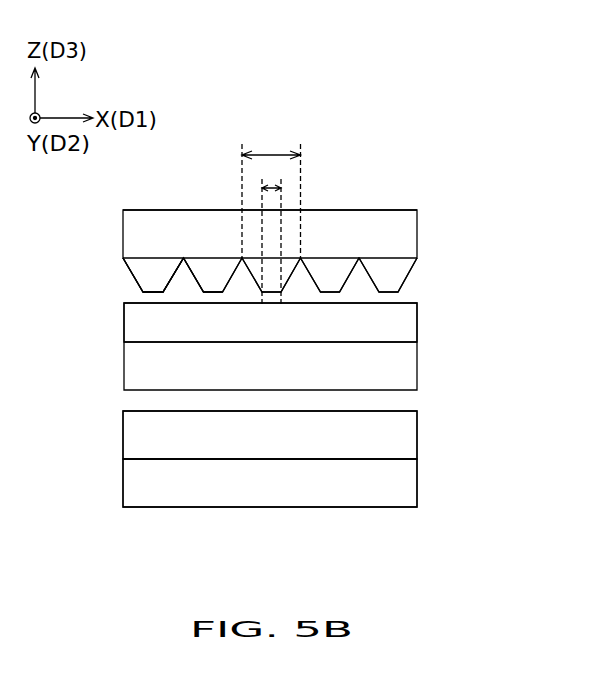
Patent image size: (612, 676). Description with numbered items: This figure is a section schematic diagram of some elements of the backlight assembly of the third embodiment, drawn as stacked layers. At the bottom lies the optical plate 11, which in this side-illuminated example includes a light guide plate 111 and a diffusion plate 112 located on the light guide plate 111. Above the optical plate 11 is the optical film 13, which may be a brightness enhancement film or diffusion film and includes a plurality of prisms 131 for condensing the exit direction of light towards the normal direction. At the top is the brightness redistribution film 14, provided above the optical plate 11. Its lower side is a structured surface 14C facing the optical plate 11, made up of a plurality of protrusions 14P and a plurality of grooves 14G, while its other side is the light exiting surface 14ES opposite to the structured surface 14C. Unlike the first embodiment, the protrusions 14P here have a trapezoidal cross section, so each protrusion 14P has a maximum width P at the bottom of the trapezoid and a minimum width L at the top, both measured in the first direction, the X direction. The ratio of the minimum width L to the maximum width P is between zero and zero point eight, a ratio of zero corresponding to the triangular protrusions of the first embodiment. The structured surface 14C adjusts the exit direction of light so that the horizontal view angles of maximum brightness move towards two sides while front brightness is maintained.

The optical plate 11 is at (505, 433).
The light guide plate 111 is at (403, 479).
The diffusion plate 112 is at (403, 438).
The optical film 13 is at (402, 372).
The prisms 131 is at (402, 330).
The brightness redistribution film 14 is at (403, 236).
The light exiting surface 14ES is at (388, 210).
The structured surface 14C is at (432, 283).
The protrusions 14P is at (148, 278).
The grooves 14G is at (180, 298).
The maximum width P is at (271, 192).
The minimum width L is at (271, 234).